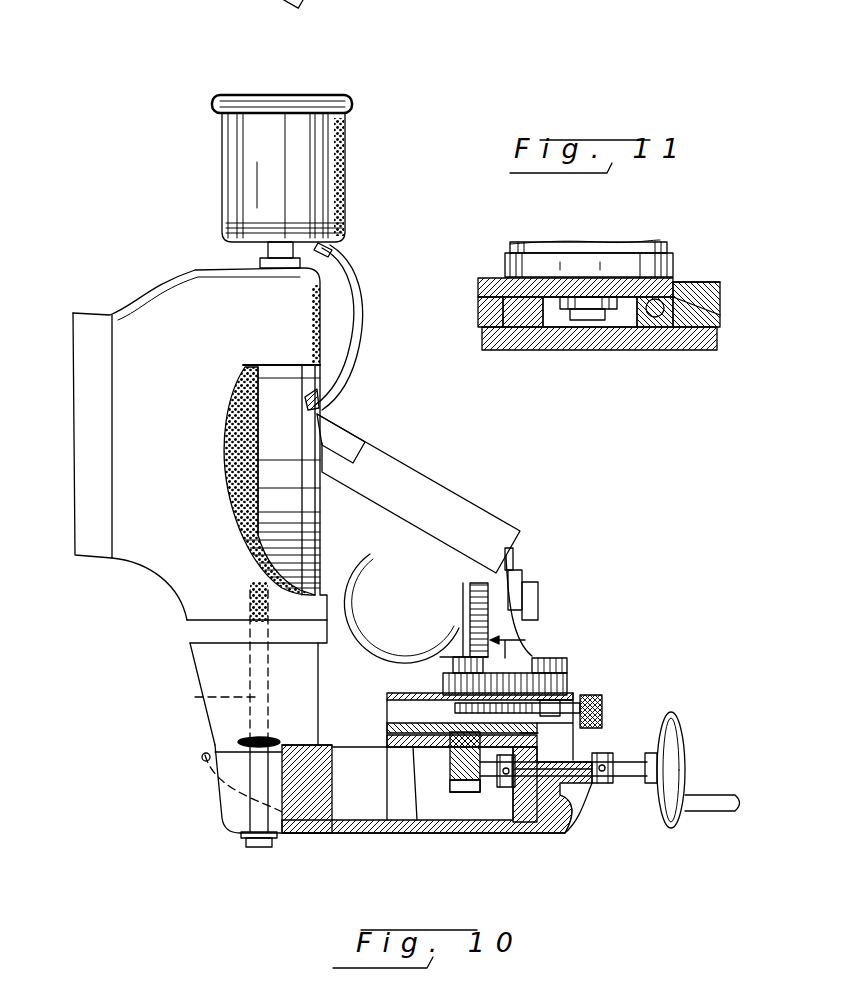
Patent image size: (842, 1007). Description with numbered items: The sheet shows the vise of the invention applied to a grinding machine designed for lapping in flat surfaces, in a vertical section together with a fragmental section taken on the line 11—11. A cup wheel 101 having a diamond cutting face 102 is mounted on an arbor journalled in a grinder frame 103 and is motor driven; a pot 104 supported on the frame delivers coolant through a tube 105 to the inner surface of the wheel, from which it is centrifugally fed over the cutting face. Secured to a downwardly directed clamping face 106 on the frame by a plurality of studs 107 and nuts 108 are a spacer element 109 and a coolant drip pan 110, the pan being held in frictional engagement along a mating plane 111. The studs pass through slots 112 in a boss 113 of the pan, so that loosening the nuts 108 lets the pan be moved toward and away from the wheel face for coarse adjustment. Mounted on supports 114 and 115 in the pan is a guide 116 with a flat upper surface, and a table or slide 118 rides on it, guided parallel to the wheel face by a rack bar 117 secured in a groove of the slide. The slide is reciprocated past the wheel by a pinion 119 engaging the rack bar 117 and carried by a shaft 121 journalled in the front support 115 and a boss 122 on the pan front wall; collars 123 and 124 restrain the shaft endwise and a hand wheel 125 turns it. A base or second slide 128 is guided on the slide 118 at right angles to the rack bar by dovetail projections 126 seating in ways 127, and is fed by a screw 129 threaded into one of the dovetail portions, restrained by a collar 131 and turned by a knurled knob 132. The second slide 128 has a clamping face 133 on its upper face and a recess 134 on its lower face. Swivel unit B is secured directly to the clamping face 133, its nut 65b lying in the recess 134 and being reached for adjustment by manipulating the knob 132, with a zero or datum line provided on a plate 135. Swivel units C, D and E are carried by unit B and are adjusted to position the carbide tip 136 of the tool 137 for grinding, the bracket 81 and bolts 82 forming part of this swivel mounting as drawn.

In FIG. 10, the cup wheel 101 is at (250, 443).
In FIG. 10, the diamond cutting face 102 is at (322, 398).
In FIG. 10, the grinder frame 103 is at (178, 395).
In FIG. 10, the pot 104 is at (340, 146).
In FIG. 10, the tube 105 is at (360, 290).
In FIG. 10, the clamping face 106 is at (200, 621).
In FIG. 10, the studs 107 is at (195, 697).
In FIG. 10, the nuts 108 is at (248, 842).
In FIG. 10, the spacer element 109 is at (306, 685).
In FIG. 10, the coolant drip pan 110 is at (456, 836).
In FIG. 10, the mating plane 111 is at (304, 745).
In FIG. 10, the slots 112 is at (212, 804).
In FIG. 10, the boss 113 is at (305, 836).
In FIG. 10, the support 114 is at (400, 792).
In FIG. 10, the front support 115 is at (528, 824).
In FIG. 10, the guide 116 is at (387, 742).
In FIG. 10, the rack bar 117 is at (460, 732).
In FIG. 10, the table or slide 118 is at (432, 730).
In FIG. 11, the table or slide 118 is at (706, 348).
In FIG. 10, the pinion 119 is at (456, 792).
In FIG. 10, the shaft 121 is at (628, 760).
In FIG. 10, the boss 122 is at (600, 792).
In FIG. 10, the collar 123 is at (507, 788).
In FIG. 10, the collar 124 is at (608, 786).
In FIG. 10, the hand wheel 125 is at (686, 768).
In FIG. 11, the dovetail projections 126 is at (528, 322).
In FIG. 11, the ways 127 is at (700, 297).
In FIG. 10, the base or second slide 128 is at (387, 697).
In FIG. 11, the base or second slide 128 is at (708, 318).
In FIG. 10, the screw 129 is at (577, 703).
In FIG. 11, the screw 129 is at (678, 280).
In FIG. 10, the collar 131 is at (560, 718).
In FIG. 10, the knurled knob 132 is at (602, 708).
In FIG. 11, the clamping face 133 is at (540, 262).
In FIG. 11, the recess 134 is at (627, 335).
In FIG. 10, the plate 135 is at (540, 672).
In FIG. 10, the carbide tip 136 is at (342, 438).
In FIG. 10, the tool 137 is at (385, 456).
In FIG. 10, the bracket 81 is at (490, 528).
In FIG. 10, the bolts 82 is at (468, 540).
In FIG. 11, the nut 65b is at (592, 322).
In FIG. 10, the section line 11 is at (524, 687).
In FIG. 10, the swivel unit B is at (525, 565).
In FIG. 11, the swivel unit B is at (661, 243).
In FIG. 10, the swivel unit C is at (438, 659).
In FIG. 10, the swivel unit D is at (363, 555).
In FIG. 10, the swivel unit E is at (513, 548).